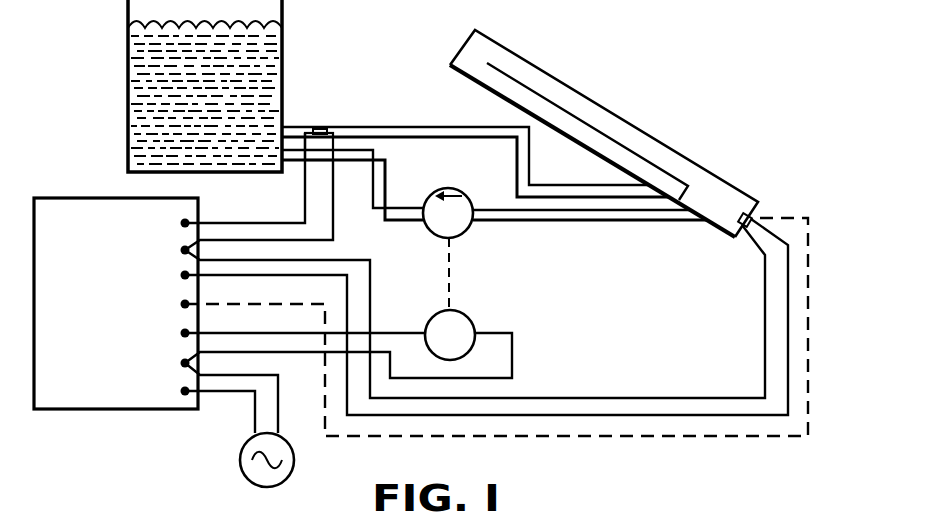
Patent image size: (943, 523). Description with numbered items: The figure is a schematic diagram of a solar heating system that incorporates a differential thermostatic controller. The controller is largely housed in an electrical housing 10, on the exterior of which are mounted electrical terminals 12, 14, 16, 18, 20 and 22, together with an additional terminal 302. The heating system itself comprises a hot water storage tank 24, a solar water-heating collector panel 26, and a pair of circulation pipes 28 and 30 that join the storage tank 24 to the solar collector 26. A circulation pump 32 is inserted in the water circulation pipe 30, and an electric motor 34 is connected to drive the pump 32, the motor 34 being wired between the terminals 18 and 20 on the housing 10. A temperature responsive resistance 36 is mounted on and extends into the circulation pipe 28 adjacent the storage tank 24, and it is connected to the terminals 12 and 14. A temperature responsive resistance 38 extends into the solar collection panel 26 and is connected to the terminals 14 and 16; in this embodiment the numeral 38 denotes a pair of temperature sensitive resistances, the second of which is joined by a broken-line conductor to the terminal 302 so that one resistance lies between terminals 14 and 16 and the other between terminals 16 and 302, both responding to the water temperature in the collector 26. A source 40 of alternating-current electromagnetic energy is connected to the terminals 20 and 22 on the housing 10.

The electrical housing 10 is at (59, 212).
The electrical terminal 12 is at (231, 186).
The electrical terminal 14 is at (461, 279).
The electrical terminal 16 is at (472, 317).
The electrical terminal 18 is at (291, 334).
The electrical terminal 20 is at (206, 405).
The electrical terminal 22 is at (334, 383).
The additional terminal 302 is at (477, 327).
The hot water storage tank 24 is at (192, 37).
The solar water-heating collector panel 26 is at (455, 55).
The water circulation pipe 28 is at (458, 127).
The water circulation pipe 30 is at (408, 208).
The circulation pump 32 is at (467, 199).
The electric motor 34 is at (467, 316).
The temperature responsive resistance 36 is at (321, 128).
The temperature responsive resistance 38 is at (756, 211).
The AC power source 40 is at (293, 450).